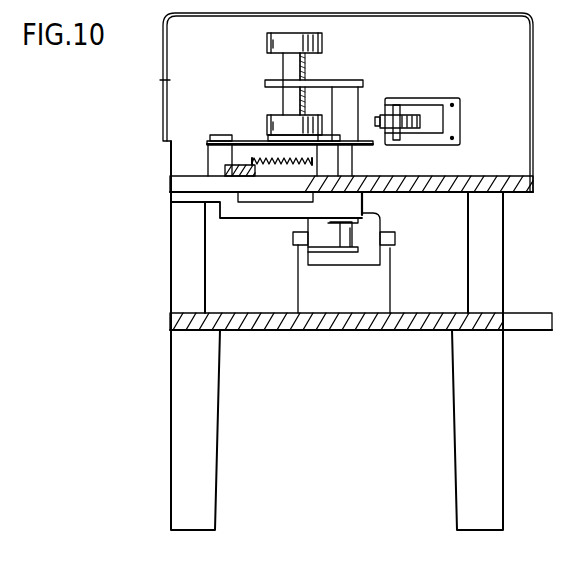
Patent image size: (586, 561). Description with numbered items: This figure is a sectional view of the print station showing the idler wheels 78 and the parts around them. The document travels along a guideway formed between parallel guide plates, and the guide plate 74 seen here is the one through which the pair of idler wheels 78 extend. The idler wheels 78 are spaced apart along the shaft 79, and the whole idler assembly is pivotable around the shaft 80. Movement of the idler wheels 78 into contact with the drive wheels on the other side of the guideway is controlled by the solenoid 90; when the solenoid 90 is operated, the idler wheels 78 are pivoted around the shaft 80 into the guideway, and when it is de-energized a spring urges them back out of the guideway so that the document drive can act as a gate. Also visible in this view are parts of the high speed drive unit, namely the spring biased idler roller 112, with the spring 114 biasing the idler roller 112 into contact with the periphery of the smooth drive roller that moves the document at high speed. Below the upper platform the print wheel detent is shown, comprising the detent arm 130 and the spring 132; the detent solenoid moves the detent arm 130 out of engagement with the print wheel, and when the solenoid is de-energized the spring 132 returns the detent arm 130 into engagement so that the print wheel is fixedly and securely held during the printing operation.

The guide plate 74 is at (168, 82).
The idler wheels 78 is at (272, 44).
The shaft 79 is at (307, 70).
The shaft 80 is at (343, 162).
The solenoid 90 is at (372, 227).
The idler roller 112 is at (422, 123).
The spring 114 is at (423, 97).
The detent arm 130 is at (225, 169).
The spring 132 is at (283, 163).